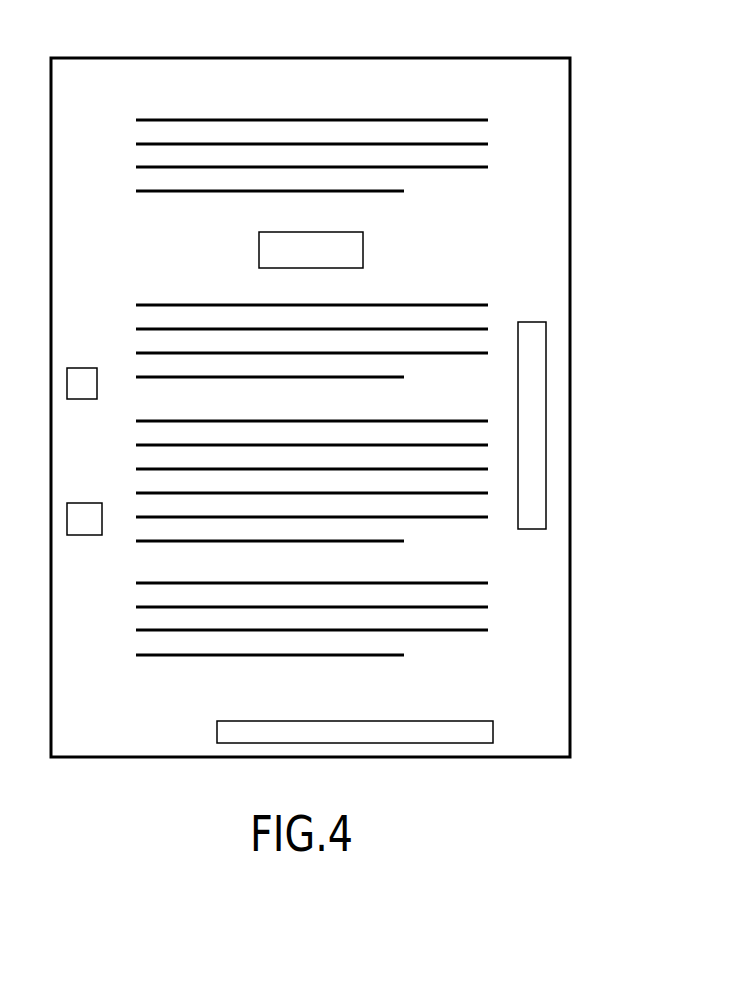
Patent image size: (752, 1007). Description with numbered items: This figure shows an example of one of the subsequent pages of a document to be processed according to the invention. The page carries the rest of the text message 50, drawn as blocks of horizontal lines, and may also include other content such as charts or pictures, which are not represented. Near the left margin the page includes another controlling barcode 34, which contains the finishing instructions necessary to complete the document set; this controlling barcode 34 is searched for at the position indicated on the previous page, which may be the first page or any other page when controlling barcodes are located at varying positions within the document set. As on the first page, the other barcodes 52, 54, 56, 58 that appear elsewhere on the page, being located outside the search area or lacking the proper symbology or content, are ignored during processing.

The text message 50 is at (345, 118).
The barcode 52 is at (363, 250).
The barcode 54 is at (546, 396).
The controlling barcode 34 is at (78, 368).
The barcode 56 is at (76, 535).
The barcode 58 is at (247, 721).